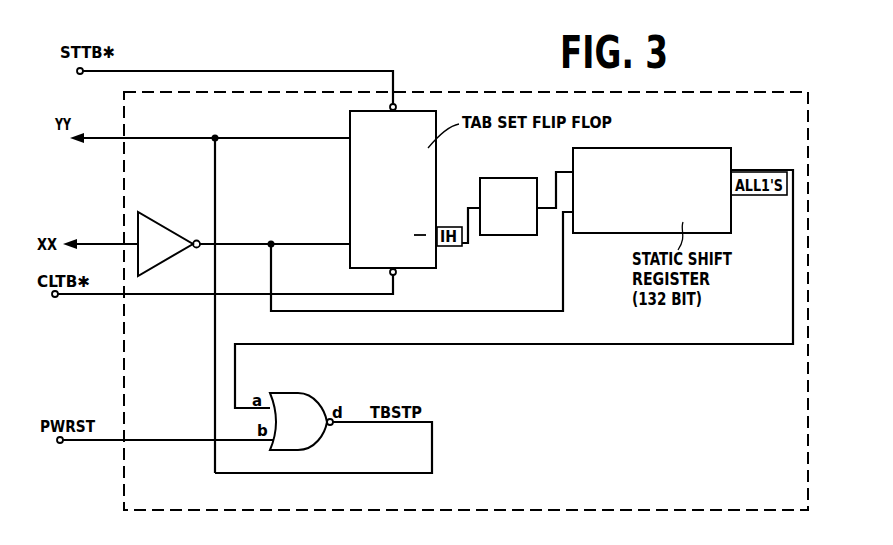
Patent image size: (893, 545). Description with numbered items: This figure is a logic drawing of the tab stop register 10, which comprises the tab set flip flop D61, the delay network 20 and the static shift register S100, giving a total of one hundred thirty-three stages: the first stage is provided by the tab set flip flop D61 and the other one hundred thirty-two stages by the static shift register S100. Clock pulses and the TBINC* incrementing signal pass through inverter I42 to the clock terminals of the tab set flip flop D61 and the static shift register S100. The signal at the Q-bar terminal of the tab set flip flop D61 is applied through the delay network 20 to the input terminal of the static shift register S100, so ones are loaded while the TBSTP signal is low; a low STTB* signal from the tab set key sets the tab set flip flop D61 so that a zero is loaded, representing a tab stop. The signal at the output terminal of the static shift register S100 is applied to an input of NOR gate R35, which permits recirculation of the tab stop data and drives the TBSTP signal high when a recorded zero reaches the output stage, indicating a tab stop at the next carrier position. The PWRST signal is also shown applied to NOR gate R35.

The tab stop register 10 is at (746, 498).
The delay network 20 is at (515, 235).
The tab set flip flop D61 is at (409, 203).
The inverter I42 is at (169, 244).
The NOR gate R35 is at (301, 421).
The static shift register S100 is at (652, 190).